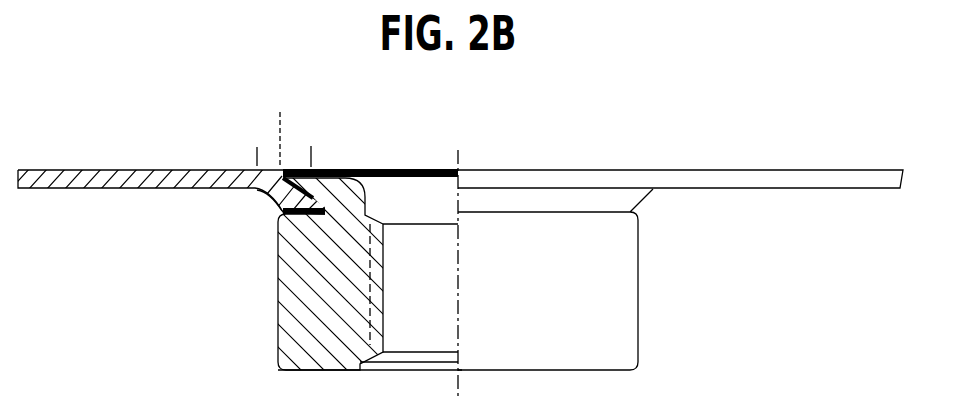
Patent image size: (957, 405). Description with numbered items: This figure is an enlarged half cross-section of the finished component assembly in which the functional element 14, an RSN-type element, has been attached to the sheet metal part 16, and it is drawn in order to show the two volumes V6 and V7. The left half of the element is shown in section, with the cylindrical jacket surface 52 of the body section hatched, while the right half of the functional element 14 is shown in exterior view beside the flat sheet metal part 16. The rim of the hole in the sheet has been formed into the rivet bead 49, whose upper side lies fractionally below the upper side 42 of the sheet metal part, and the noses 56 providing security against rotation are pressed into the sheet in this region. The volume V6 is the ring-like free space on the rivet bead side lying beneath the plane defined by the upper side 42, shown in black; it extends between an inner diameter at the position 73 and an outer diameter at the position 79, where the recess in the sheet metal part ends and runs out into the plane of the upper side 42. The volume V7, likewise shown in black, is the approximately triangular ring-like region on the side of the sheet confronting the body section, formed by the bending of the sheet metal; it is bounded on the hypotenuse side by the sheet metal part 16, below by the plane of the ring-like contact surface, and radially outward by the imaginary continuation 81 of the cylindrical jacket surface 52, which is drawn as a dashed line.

The functional element 14 is at (650, 302).
The sheet metal part 16 is at (756, 164).
The upper side of the sheet metal part 42 is at (116, 168).
The rivet bead 49 is at (293, 183).
The jacket surface 52 is at (277, 327).
The noses providing security against rotation 56 is at (307, 214).
The position corresponding to the inner diameter of volume V6 73 is at (311, 146).
The position corresponding to the outer diameter of volume V6 79 is at (257, 147).
The imaginary continuation of the cylindrical jacket surface 81 is at (279, 112).
The volume V6 is at (293, 158).
The volume V7 is at (264, 213).